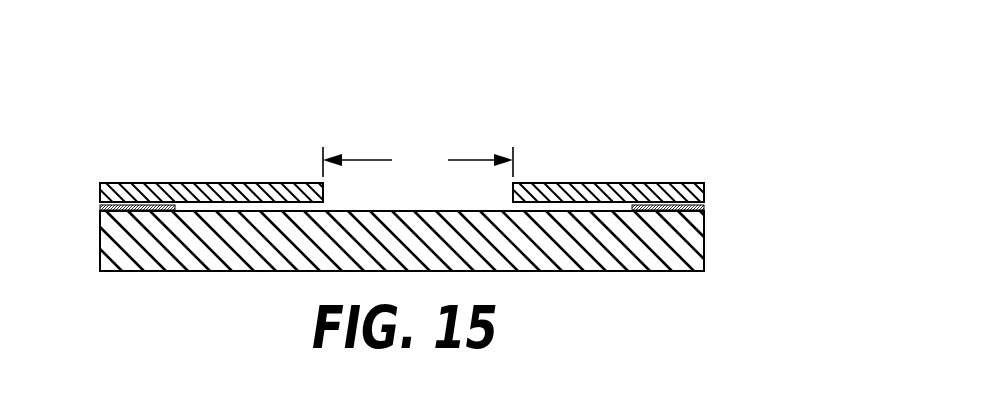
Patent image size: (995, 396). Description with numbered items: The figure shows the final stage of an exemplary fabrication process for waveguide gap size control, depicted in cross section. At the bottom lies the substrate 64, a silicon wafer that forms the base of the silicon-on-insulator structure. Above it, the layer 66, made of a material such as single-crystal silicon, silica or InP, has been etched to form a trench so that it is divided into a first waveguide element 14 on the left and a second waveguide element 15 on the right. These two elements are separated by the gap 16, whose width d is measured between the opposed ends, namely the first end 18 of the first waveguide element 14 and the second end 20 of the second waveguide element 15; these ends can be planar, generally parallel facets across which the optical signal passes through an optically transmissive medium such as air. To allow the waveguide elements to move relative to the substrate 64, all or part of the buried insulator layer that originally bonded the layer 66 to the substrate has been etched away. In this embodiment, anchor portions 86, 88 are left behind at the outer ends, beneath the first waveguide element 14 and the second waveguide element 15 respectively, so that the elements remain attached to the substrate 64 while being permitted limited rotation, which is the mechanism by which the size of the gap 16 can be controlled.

The first waveguide element 14 is at (180, 160).
The second waveguide element 15 is at (618, 183).
The gap 16 is at (483, 147).
The first end 18 is at (325, 193).
The second end 20 is at (512, 193).
The substrate 64 is at (100, 248).
The layer 66 is at (100, 195).
The anchor portion 86 is at (100, 207).
The anchor portion 88 is at (705, 207).